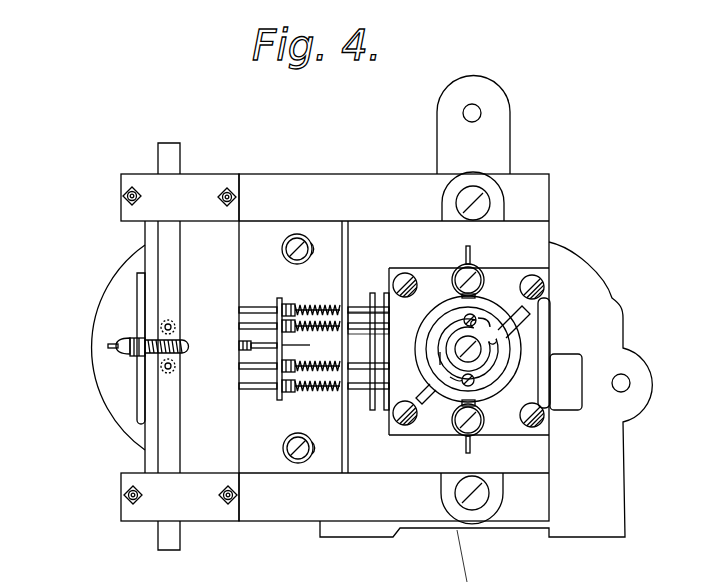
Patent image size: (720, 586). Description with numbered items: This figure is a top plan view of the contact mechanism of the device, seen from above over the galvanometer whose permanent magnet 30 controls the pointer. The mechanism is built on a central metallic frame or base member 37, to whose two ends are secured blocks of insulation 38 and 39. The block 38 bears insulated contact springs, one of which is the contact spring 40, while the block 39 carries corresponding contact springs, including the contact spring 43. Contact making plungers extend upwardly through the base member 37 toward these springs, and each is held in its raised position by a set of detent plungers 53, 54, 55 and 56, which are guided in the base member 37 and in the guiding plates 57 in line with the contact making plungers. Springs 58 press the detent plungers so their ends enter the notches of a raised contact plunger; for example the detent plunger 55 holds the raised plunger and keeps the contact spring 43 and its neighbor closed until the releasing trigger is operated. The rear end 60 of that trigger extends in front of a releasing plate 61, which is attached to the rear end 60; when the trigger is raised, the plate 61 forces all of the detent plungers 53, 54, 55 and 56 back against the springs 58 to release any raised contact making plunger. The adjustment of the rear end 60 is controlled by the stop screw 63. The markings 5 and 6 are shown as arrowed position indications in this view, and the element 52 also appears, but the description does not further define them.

The unlocked position 5 is at (78, 391).
The locked position 6 is at (70, 326).
The permanent magnet 30 is at (120, 408).
The base member 37 is at (153, 445).
The block of insulation 38 is at (215, 167).
The block of insulation 39 is at (121, 519).
The contact spring 40 is at (170, 148).
The contact spring 43 is at (161, 535).
The guide block 52 is at (368, 323).
The detent plunger 53 is at (253, 307).
The detent plunger 54 is at (239, 324).
The detent plunger 55 is at (242, 372).
The detent plunger 56 is at (270, 391).
The guiding plate 57 is at (316, 305).
The spring 58 is at (317, 348).
The rear end of trigger 60 is at (262, 347).
The releasing plate 61 is at (285, 303).
The stop screw 63 is at (181, 341).